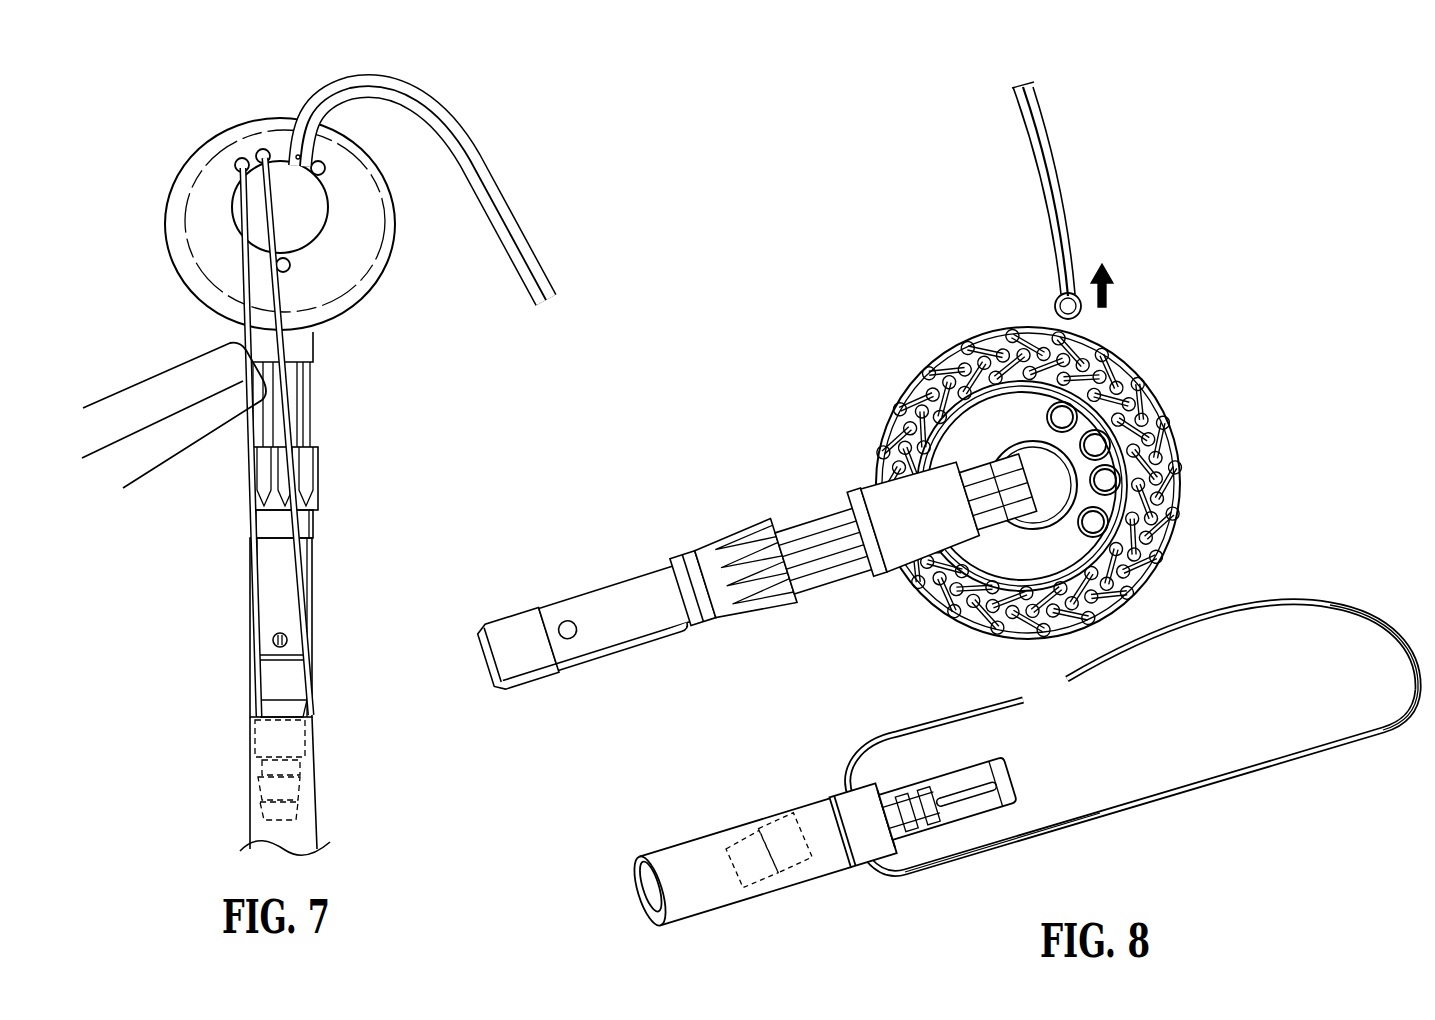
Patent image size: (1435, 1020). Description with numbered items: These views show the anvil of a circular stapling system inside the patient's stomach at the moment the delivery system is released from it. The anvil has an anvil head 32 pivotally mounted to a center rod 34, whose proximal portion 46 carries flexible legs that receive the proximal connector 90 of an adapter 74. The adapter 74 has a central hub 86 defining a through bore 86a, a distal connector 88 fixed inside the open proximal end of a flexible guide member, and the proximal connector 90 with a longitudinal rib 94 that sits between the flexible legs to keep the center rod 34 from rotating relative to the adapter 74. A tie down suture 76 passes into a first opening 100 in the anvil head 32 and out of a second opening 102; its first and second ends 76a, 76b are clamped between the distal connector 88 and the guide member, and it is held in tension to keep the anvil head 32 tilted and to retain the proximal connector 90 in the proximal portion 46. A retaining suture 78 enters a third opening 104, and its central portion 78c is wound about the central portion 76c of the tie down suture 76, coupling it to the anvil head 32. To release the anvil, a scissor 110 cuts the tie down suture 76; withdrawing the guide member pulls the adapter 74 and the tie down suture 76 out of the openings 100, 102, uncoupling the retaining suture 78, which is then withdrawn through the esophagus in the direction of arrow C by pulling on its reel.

In FIG. 7, the anvil head 32 is at (207, 140).
In FIG. 7, the center rod 34 is at (321, 456).
In FIG. 7, the proximal portion 46 is at (272, 612).
In FIG. 7, the adapter 74 is at (313, 688).
In FIG. 8, the adapter 74 is at (1022, 772).
In FIG. 7, the tie down suture 76 is at (298, 531).
In FIG. 8, the tie down suture 76 is at (1305, 595).
In FIG. 8, the first end 76a is at (907, 733).
In FIG. 8, the second end 76b is at (943, 867).
In FIG. 8, the central portion 76c is at (1393, 636).
In FIG. 7, the retaining suture 78 is at (439, 94).
In FIG. 8, the retaining suture 78 is at (1059, 129).
In FIG. 8, the central portion 78c is at (1084, 312).
In FIG. 8, the central hub 86 is at (850, 852).
In FIG. 8, the through bore 86a is at (868, 858).
In FIG. 8, the distal connector 88 is at (769, 877).
In FIG. 8, the proximal connector 90 is at (984, 768).
In FIG. 8, the longitudinal rib 94 is at (940, 797).
In FIG. 7, the first opening 100 is at (248, 160).
In FIG. 7, the second opening 102 is at (265, 154).
In FIG. 7, the third opening 104 is at (343, 147).
In FIG. 7, the scissor 110 is at (111, 394).
In FIG. 8, the arrow C is at (1111, 285).